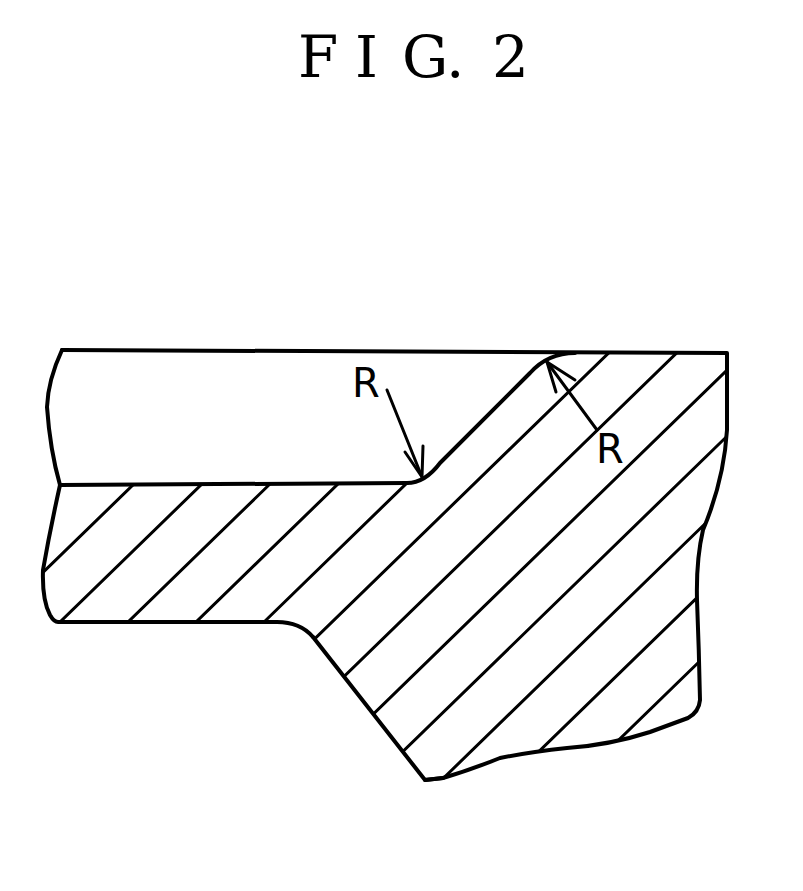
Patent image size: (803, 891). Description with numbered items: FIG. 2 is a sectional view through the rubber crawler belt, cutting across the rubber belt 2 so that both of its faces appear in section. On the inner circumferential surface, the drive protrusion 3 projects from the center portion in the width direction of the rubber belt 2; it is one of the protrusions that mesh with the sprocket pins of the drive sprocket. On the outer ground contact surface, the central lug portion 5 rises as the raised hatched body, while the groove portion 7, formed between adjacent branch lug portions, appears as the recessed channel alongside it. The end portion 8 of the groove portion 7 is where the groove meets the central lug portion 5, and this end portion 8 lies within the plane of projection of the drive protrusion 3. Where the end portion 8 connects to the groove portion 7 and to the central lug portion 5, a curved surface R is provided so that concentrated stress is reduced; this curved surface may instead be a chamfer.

The rubber belt 2 is at (180, 603).
The drive protrusion 3 is at (398, 718).
The central lug portion 5 is at (633, 370).
The groove portion 7 is at (143, 370).
The end portion 8 is at (447, 393).